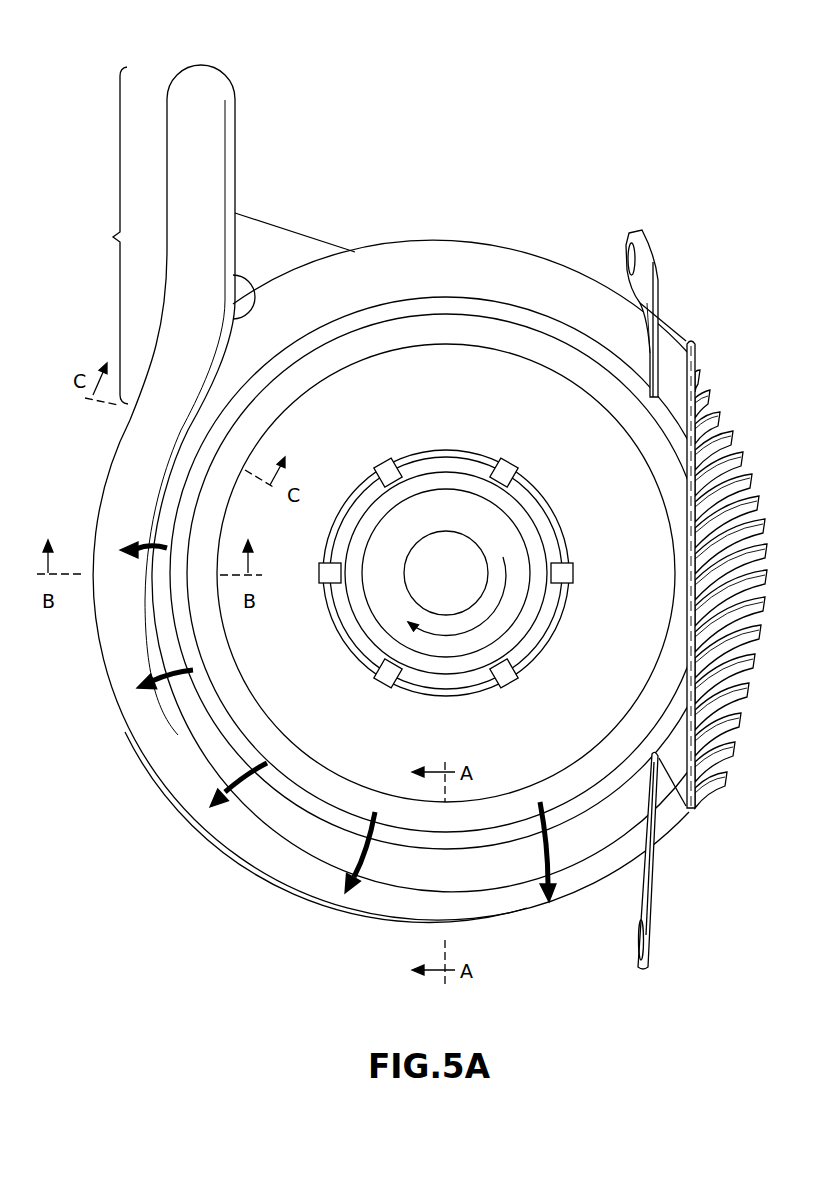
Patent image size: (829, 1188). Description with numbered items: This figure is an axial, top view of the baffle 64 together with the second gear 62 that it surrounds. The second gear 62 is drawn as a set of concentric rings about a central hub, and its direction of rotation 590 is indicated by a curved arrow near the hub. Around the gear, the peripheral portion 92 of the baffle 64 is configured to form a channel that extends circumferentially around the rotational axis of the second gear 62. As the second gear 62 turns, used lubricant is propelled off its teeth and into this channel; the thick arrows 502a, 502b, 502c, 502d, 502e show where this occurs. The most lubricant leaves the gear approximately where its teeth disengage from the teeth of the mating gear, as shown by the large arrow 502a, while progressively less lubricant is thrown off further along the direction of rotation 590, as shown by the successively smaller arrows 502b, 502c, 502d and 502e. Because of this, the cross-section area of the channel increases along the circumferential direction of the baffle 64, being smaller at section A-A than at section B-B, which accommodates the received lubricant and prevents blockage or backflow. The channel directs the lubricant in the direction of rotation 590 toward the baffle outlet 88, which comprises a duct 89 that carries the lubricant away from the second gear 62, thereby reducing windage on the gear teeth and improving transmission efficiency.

The second gear 62 is at (497, 413).
The baffle 64 is at (457, 265).
The baffle outlet 88 is at (108, 235).
The duct 89 is at (208, 172).
The peripheral portion 92 is at (176, 832).
The direction of rotation 590 is at (497, 607).
The arrow 502a is at (563, 860).
The arrow 502b is at (372, 863).
The arrow 502c is at (247, 793).
The arrow 502d is at (177, 688).
The arrow 502e is at (160, 552).